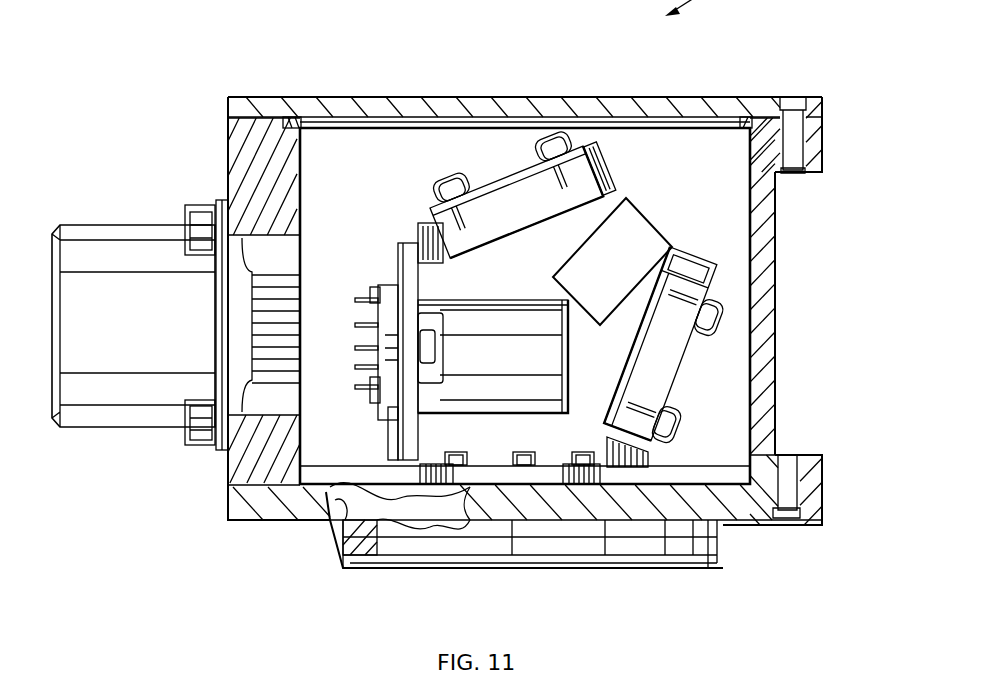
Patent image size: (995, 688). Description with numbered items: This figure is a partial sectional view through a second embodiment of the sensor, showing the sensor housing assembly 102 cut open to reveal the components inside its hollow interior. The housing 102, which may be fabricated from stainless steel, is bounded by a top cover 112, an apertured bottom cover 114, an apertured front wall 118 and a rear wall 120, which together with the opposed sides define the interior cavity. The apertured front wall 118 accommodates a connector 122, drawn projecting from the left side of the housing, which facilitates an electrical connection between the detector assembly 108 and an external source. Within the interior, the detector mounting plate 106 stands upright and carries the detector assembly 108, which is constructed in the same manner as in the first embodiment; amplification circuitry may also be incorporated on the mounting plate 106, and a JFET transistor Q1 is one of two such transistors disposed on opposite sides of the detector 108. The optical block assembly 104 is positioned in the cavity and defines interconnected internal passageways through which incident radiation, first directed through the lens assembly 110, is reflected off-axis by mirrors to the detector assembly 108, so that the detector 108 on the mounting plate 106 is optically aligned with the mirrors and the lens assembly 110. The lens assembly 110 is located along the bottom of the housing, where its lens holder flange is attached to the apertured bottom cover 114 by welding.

The sensor housing assembly 102 is at (795, 318).
The optical block assembly 104 is at (632, 235).
The detector mounting plate 106 is at (395, 263).
The detector assembly 108 is at (445, 330).
The JFET transistor Q1 is at (436, 344).
The lens assembly 110 is at (417, 556).
The top cover 112 is at (320, 97).
The apertured bottom cover 114 is at (743, 527).
The apertured front wall 118 is at (228, 164).
The rear wall 120 is at (780, 253).
The connector 122 is at (138, 224).